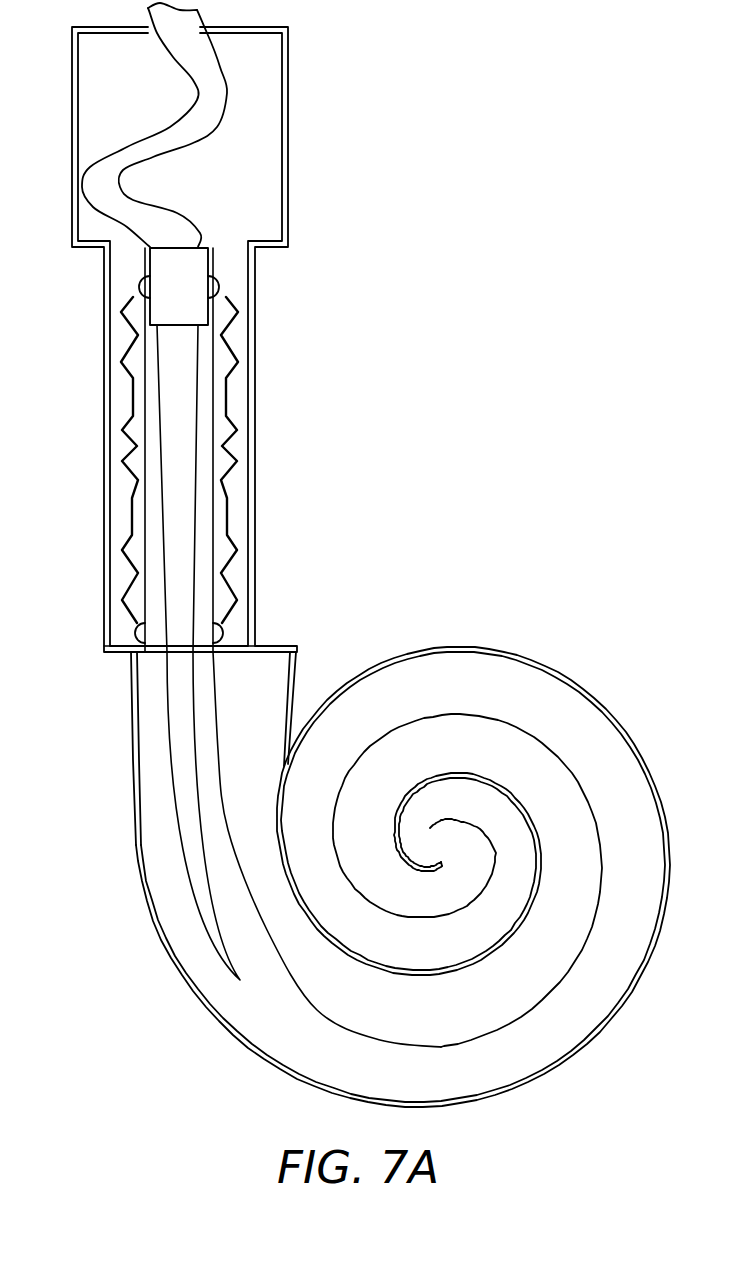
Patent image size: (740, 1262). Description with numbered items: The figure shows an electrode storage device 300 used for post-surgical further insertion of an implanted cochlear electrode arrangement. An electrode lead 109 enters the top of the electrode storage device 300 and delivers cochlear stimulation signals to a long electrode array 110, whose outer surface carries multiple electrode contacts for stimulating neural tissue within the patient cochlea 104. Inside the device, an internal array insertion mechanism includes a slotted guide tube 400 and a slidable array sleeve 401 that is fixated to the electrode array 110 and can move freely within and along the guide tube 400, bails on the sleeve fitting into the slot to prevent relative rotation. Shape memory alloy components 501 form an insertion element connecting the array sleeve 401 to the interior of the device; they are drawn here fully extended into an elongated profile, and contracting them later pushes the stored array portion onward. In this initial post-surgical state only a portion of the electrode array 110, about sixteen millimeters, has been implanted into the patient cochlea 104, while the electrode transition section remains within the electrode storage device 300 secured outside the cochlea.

The electrode storage device 300 is at (334, 102).
The electrode lead 109 is at (195, 143).
The array sleeve 401 is at (160, 312).
The slotted guide tube 400 is at (214, 399).
The shape memory alloy components 501 is at (228, 520).
The electrode array 110 is at (177, 716).
The patient cochlea 104 is at (564, 670).